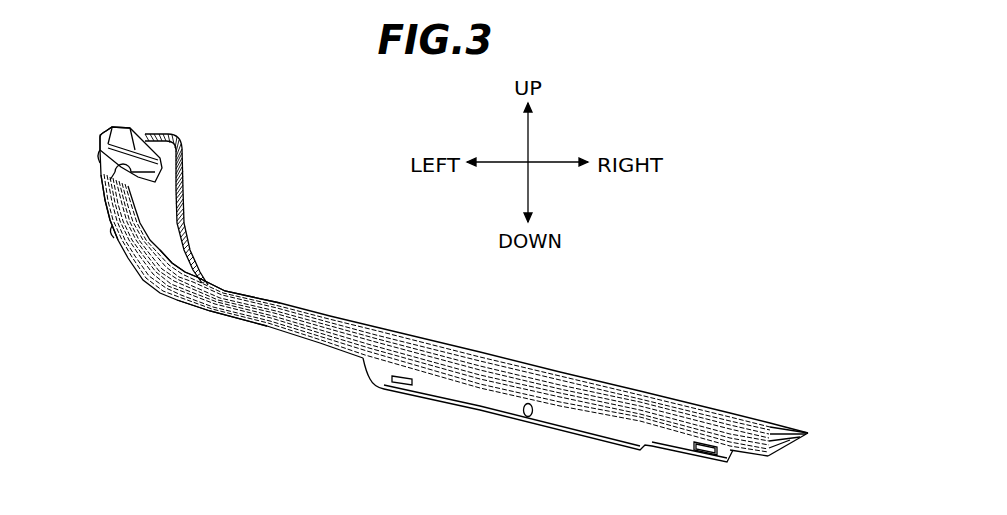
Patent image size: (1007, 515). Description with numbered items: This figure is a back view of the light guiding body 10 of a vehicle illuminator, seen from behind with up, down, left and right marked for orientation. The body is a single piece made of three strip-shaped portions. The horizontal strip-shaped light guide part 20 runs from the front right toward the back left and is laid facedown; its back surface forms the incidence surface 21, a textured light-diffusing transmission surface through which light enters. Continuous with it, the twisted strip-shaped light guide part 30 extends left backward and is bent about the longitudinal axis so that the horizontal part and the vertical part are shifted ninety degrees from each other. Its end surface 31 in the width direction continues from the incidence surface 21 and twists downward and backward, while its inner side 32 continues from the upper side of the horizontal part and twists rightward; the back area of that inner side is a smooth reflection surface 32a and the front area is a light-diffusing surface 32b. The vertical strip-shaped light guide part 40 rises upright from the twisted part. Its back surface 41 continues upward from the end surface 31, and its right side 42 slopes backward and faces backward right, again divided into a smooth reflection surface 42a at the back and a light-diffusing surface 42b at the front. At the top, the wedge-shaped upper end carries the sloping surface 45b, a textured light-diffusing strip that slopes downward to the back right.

The light guiding body 10 is at (663, 268).
The horizontal strip-shaped light guide part 20 is at (615, 380).
The incidence surface 21 is at (567, 400).
The twisted strip-shaped light guide part 30 is at (143, 282).
The one end surface in the width direction 31 is at (205, 304).
The inner side 32 is at (299, 232).
The smooth reflection surface 32a is at (197, 275).
The light-diffusing surface 32b is at (202, 282).
The vertical strip-shaped light guide part 40 is at (91, 160).
The back surface 41 is at (112, 210).
The right side 42 is at (258, 163).
The smooth reflection surface 42a is at (155, 198).
The light-diffusing surface 42b is at (177, 220).
The sloping surface 45b is at (148, 147).